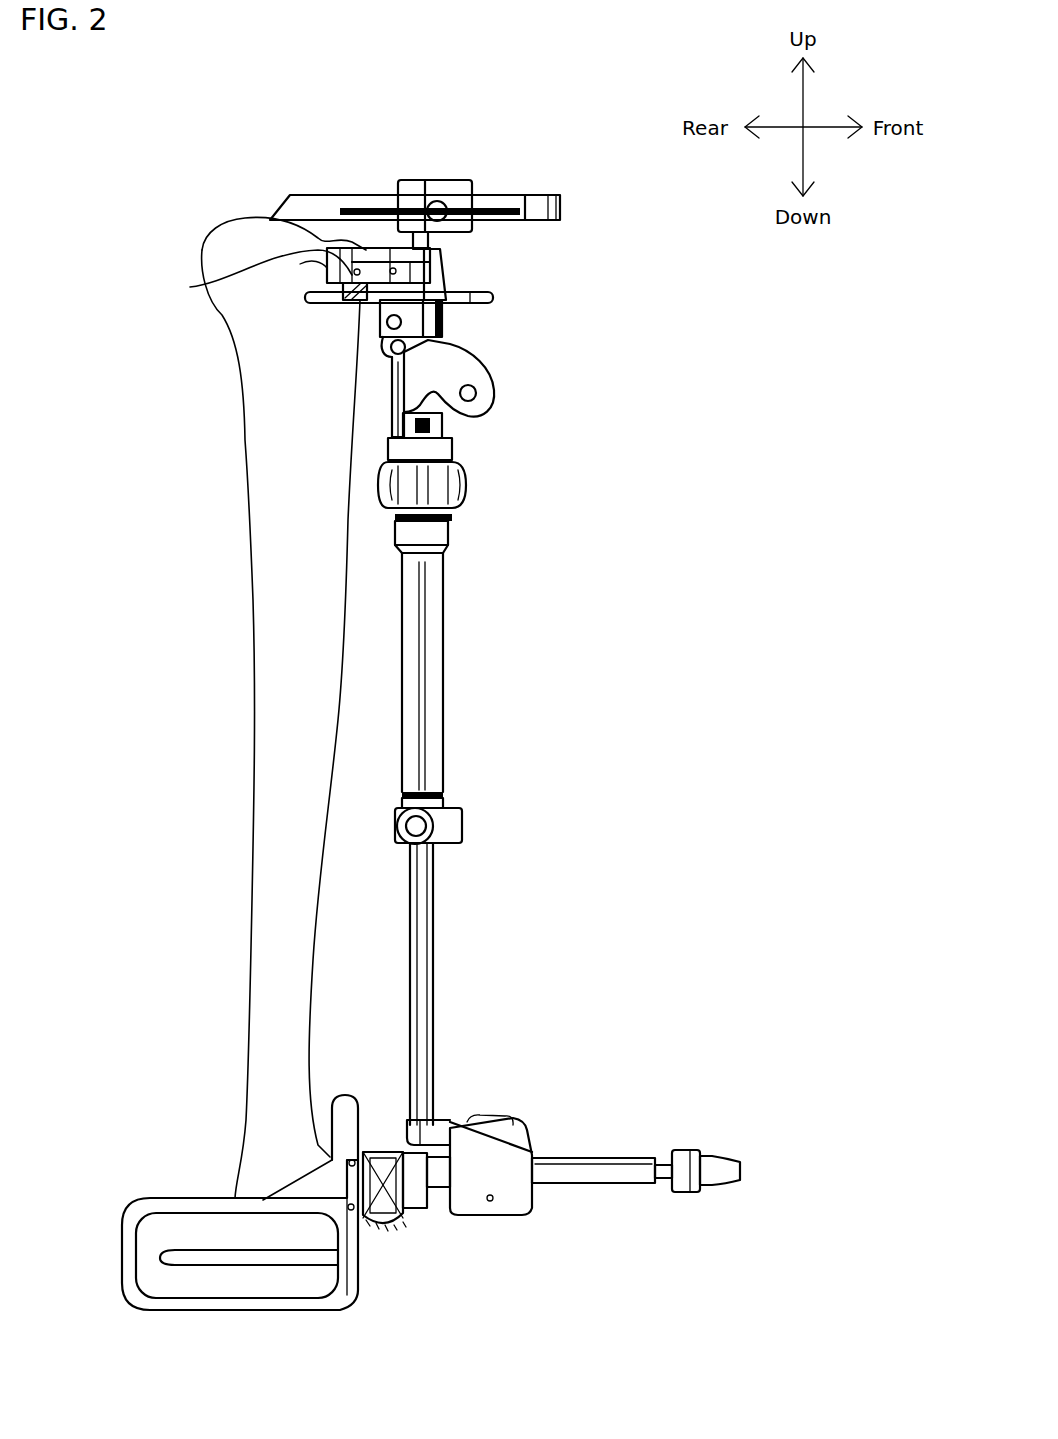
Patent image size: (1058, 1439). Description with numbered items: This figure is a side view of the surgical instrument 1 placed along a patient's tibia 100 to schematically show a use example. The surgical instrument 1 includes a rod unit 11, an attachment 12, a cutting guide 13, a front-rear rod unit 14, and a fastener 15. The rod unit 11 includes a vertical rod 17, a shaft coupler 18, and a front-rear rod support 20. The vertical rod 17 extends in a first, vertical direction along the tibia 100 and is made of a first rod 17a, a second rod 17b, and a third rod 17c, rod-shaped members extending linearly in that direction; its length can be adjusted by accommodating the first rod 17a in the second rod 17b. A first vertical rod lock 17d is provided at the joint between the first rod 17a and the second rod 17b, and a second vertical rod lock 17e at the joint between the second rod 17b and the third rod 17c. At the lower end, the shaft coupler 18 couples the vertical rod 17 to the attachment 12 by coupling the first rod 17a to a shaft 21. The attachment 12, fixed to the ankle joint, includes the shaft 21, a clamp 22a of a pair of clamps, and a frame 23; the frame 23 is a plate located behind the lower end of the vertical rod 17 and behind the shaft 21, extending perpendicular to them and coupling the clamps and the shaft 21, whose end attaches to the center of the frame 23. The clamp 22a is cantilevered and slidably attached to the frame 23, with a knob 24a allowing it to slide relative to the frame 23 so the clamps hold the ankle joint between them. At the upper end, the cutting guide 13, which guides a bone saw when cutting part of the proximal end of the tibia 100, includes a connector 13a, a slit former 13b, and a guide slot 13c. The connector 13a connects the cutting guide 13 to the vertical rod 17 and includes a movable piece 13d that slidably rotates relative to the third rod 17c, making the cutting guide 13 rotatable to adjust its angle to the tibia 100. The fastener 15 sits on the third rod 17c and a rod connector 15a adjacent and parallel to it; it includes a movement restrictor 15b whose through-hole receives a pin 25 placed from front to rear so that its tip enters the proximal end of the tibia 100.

The surgical instrument 1 is at (379, 729).
The rod unit 11 is at (520, 958).
The attachment 12 is at (222, 1175).
The cutting guide 13 is at (370, 325).
The connector 13a is at (447, 342).
The slit former 13b is at (335, 252).
The guide slot 13c is at (325, 267).
The movable piece 13d is at (440, 412).
The front-rear rod unit 14 is at (373, 192).
The fastener 15 is at (468, 282).
The rod connector 15a is at (392, 425).
The movement restrictor 15b is at (446, 287).
The vertical rod 17 is at (405, 781).
The first rod 17a is at (430, 1010).
The second rod 17b is at (432, 636).
The third rod 17c is at (388, 442).
The first vertical rod lock 17d is at (440, 848).
The second vertical rod lock 17e is at (466, 490).
The shaft coupler 18 is at (452, 1210).
The front-rear rod support 20 is at (428, 180).
The shaft 21 is at (585, 1168).
The clamp 22a is at (128, 1208).
The frame 23 is at (378, 1220).
The knob 24a is at (348, 1095).
The pin 25 is at (450, 322).
The tibia 100 is at (222, 778).